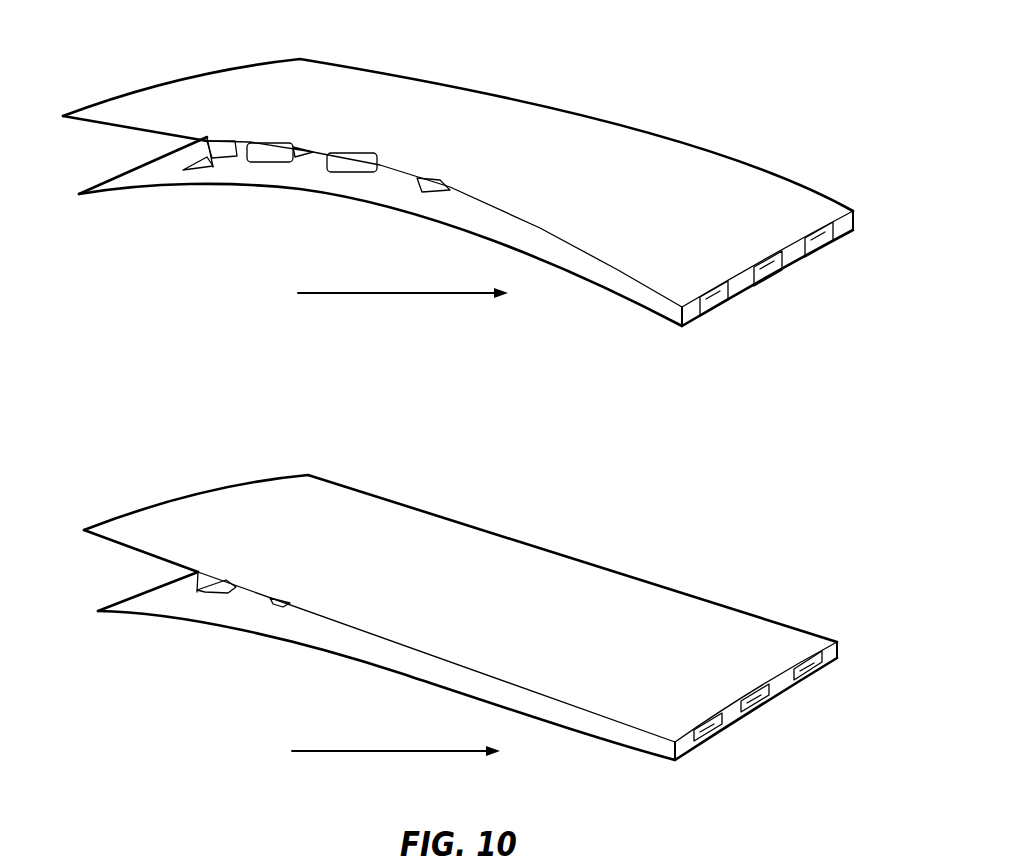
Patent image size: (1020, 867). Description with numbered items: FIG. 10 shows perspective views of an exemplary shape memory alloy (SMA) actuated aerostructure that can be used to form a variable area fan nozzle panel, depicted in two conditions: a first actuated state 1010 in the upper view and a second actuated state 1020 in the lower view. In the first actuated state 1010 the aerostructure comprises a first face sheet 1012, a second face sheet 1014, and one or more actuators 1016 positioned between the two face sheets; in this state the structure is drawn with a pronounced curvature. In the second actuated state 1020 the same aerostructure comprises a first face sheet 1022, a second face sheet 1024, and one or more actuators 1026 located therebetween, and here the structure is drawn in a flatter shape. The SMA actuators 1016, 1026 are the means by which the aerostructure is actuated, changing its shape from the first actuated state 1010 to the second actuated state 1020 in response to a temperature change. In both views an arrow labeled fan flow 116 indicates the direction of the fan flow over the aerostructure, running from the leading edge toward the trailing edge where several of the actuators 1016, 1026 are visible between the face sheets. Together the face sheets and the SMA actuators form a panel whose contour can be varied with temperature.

The first actuated state 1010 is at (468, 192).
The first face sheet 1012 is at (185, 97).
The second face sheet 1014 is at (118, 193).
The actuators 1016 is at (223, 147).
The second actuated state 1020 is at (472, 626).
The first face sheet 1022 is at (178, 523).
The second face sheet 1024 is at (137, 612).
The actuators 1026 is at (215, 590).
The fan flow 116 is at (320, 292).